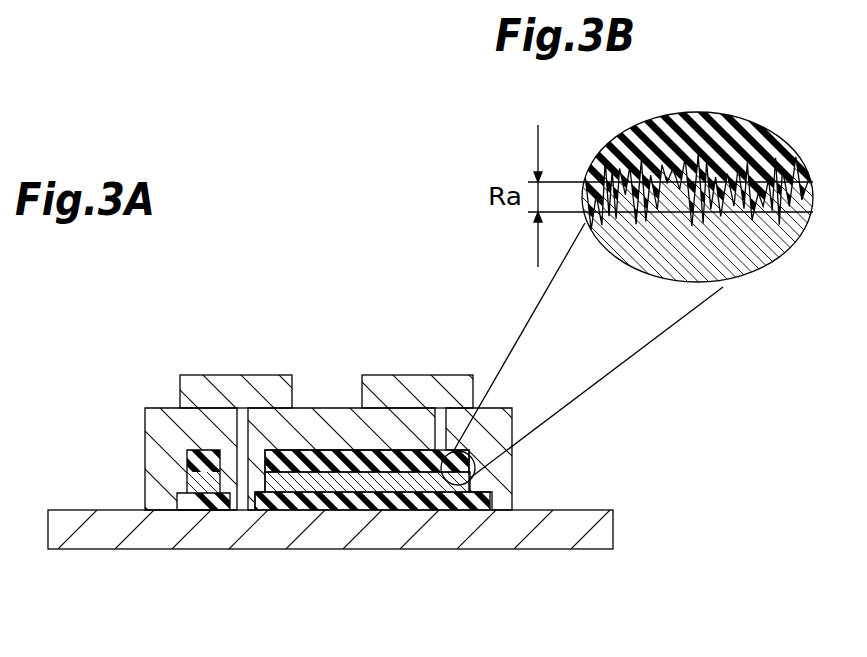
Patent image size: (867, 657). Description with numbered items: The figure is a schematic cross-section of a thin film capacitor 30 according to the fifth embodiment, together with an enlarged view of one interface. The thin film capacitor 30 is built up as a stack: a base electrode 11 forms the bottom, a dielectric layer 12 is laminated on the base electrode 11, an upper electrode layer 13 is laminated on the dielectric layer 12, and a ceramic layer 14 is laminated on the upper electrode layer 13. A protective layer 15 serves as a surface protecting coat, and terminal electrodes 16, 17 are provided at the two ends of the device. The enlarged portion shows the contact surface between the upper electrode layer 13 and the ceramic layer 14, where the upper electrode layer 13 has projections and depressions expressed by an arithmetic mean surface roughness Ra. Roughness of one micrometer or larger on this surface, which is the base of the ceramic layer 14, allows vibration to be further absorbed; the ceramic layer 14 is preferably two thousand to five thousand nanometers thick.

In FIG. 3A, the base electrode 11 is at (271, 532).
In FIG. 3A, the dielectric layer 12 is at (490, 502).
In FIG. 3A, the upper electrode layer 13 is at (473, 471).
In FIG. 3B, the upper electrode layer 13 is at (748, 258).
In FIG. 3A, the ceramic layer 14 is at (328, 457).
In FIG. 3B, the ceramic layer 14 is at (747, 128).
In FIG. 3A, the protective layer 15 is at (168, 417).
In FIG. 3A, the terminal electrode 16 is at (198, 382).
In FIG. 3A, the terminal electrode 17 is at (402, 385).
In FIG. 3A, the thin film capacitor 30 is at (360, 278).